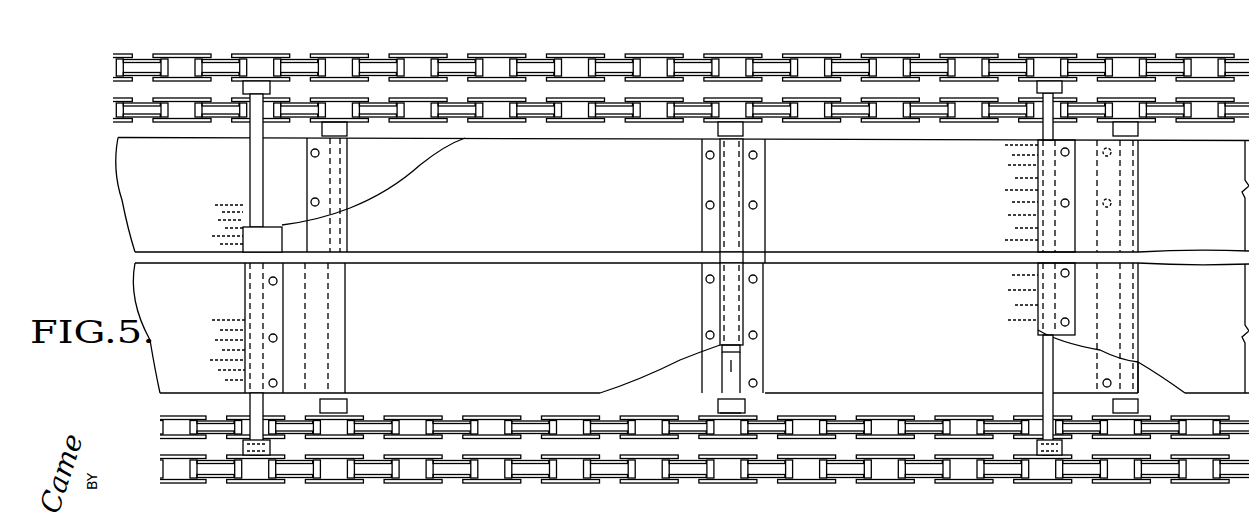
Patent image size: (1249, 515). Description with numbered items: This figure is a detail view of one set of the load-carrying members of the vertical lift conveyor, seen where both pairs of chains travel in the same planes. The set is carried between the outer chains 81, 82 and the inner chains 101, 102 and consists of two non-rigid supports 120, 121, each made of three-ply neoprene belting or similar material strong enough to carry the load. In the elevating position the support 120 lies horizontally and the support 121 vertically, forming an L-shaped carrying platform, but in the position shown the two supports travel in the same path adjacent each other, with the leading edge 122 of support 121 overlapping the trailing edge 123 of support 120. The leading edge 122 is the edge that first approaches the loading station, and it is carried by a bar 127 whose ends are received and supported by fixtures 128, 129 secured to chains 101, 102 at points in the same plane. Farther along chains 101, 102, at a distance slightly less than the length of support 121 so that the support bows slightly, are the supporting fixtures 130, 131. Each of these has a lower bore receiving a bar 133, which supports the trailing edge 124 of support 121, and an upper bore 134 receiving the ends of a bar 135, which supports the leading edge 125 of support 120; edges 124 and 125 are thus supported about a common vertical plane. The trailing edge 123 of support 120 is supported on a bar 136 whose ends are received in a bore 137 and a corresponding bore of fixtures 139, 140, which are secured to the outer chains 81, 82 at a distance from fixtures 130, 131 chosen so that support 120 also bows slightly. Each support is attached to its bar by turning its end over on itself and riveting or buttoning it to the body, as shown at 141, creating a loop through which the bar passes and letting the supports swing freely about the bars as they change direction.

The outer chain 82 is at (172, 55).
The chain 102 is at (176, 112).
The chain 101 is at (165, 416).
The outer chain 81 is at (212, 480).
The non-rigid support 120 is at (408, 178).
The non-rigid support 121 is at (150, 273).
The fixture 140 is at (271, 93).
The bar 136 is at (250, 160).
The riveted or buttoned end 141 is at (277, 284).
The trailing edge of support 120 123 is at (245, 350).
The bar 127 is at (1133, 188).
The fixture 128 is at (347, 403).
The bore 137 is at (243, 446).
The fixture 139 is at (270, 446).
The supporting fixture 131 is at (745, 131).
The leading edge of support 120 125 is at (745, 315).
The trailing edge of support 121 124 is at (718, 383).
The bar 135 is at (745, 350).
The bar 133 is at (740, 367).
The supporting fixture 130 is at (748, 406).
The upper bore 134 is at (716, 406).
The fixture 129 is at (1140, 131).
The leading edge of support 121 122 is at (1140, 370).